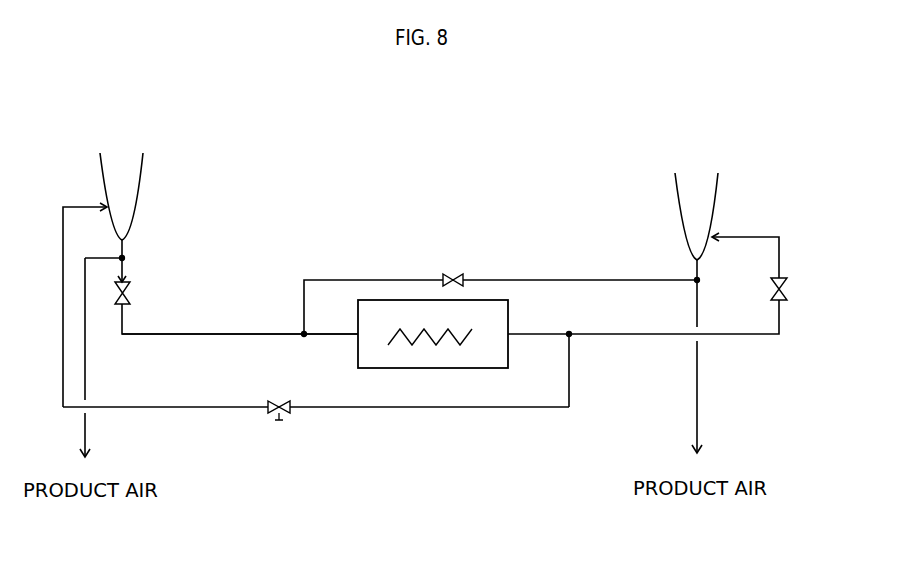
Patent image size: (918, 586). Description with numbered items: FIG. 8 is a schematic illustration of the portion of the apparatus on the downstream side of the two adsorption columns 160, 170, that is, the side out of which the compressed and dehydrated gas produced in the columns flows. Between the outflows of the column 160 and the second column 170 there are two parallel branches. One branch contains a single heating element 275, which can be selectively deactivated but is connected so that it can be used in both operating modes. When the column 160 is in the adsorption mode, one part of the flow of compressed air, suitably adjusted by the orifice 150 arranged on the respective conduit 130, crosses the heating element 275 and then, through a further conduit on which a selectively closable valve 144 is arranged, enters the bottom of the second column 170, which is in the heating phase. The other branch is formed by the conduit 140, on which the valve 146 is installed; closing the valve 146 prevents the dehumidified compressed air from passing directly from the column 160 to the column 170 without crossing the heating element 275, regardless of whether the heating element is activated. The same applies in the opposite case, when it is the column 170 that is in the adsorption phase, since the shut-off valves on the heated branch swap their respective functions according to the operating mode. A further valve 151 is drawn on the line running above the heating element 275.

The column 160 is at (121, 185).
The second column 170 is at (696, 206).
The conduit 130 is at (205, 333).
The orifice 150 is at (140, 294).
The bypass valve 151 is at (455, 269).
The heating element 275 is at (433, 348).
The selectively closable valve 144 is at (789, 289).
The conduit 140 is at (435, 407).
The valve 146 is at (280, 399).